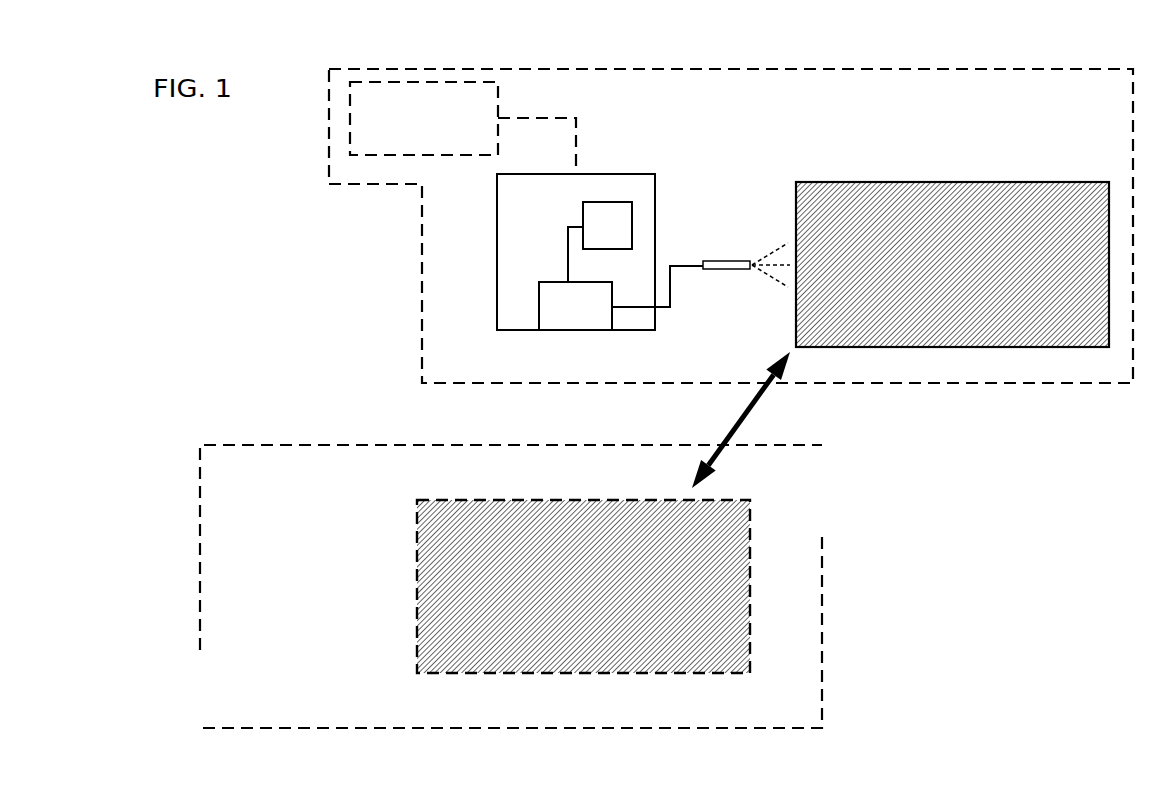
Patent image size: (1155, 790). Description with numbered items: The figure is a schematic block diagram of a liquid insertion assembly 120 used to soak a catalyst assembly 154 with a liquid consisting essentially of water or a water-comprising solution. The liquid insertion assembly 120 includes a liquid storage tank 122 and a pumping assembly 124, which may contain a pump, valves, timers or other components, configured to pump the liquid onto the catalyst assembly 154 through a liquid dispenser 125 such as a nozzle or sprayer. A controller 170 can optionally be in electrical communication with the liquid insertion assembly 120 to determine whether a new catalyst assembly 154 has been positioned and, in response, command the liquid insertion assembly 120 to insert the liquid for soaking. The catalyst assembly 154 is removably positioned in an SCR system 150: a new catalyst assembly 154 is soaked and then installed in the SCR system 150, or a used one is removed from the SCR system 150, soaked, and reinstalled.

The liquid insertion assembly 120 is at (758, 60).
The controller 170 is at (409, 138).
The liquid storage tank 122 is at (590, 213).
The pumping assembly 124 is at (545, 305).
The liquid dispenser 125 is at (727, 272).
The catalyst assembly 154 is at (1028, 330).
The SCR system 150 is at (354, 440).